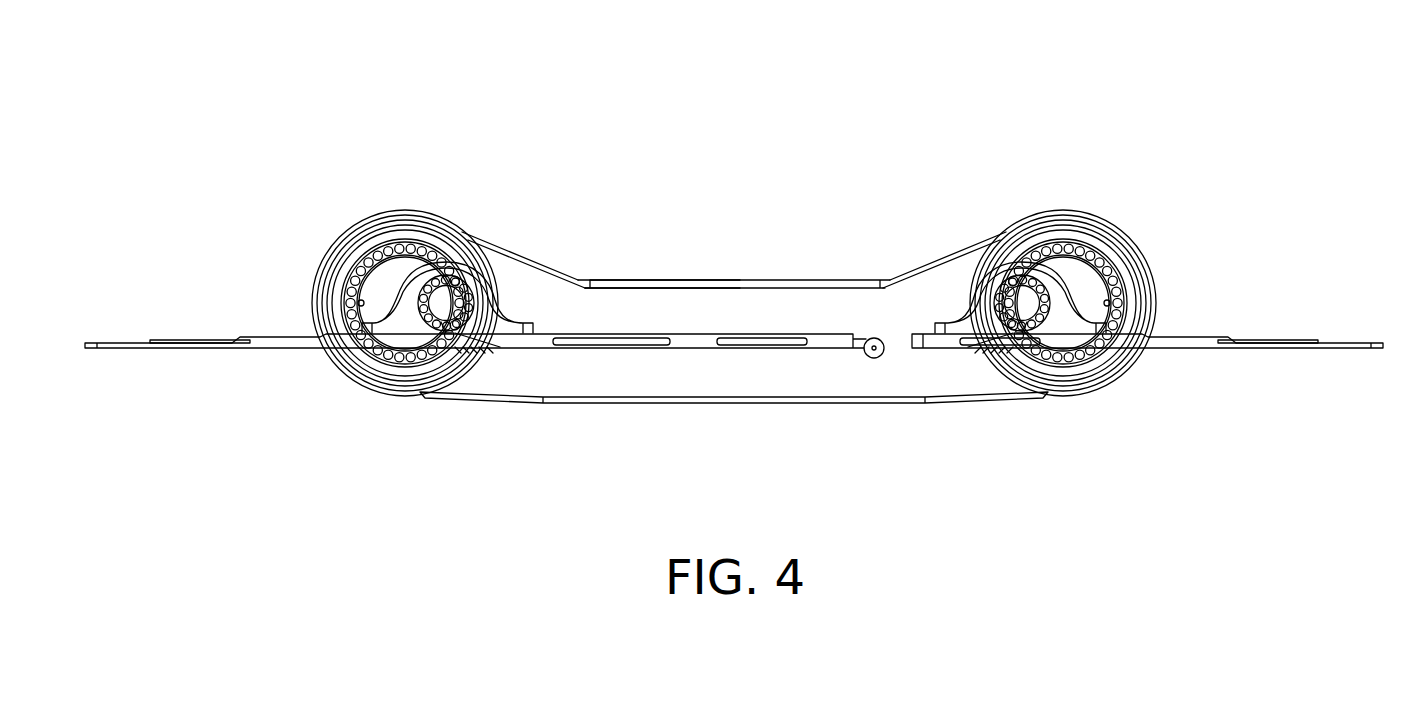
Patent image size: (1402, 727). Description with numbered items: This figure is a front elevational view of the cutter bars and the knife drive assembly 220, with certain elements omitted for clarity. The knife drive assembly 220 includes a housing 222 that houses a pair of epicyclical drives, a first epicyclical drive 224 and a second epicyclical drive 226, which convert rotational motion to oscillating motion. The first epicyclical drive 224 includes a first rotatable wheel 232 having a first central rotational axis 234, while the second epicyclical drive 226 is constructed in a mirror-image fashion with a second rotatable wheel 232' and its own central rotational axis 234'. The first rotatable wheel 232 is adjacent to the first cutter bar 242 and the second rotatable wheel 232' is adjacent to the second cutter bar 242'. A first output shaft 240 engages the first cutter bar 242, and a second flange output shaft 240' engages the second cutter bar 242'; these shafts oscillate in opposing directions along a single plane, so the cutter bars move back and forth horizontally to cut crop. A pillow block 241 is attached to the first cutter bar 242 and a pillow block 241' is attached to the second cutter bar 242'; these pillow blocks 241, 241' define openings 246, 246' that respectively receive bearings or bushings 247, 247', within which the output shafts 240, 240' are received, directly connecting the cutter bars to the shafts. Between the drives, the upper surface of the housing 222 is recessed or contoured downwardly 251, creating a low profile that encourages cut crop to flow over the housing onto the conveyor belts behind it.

The knife drive assembly 220 is at (654, 118).
The housing 222 is at (802, 275).
The first epicyclical drive 224 is at (300, 258).
The second epicyclical drive 226 is at (1184, 297).
The first rotatable wheel 232 is at (387, 256).
The second rotatable wheel 232' is at (1112, 293).
The first central rotational axis 234 is at (405, 234).
The second central rotational axis 234' is at (1108, 260).
The first output shaft 240 is at (505, 257).
The second flange output shaft 240' is at (980, 250).
The pillow block 241 is at (447, 238).
The pillow block 241' is at (1020, 231).
The first cutter bar 242 is at (484, 299).
The second cutter bar 242' is at (1147, 305).
The opening 246 is at (426, 406).
The opening 246' is at (1058, 404).
The bearing or bushing 247 is at (501, 405).
The bearing or bushing 247' is at (994, 405).
The recessed or contoured downwardly 251 is at (685, 283).